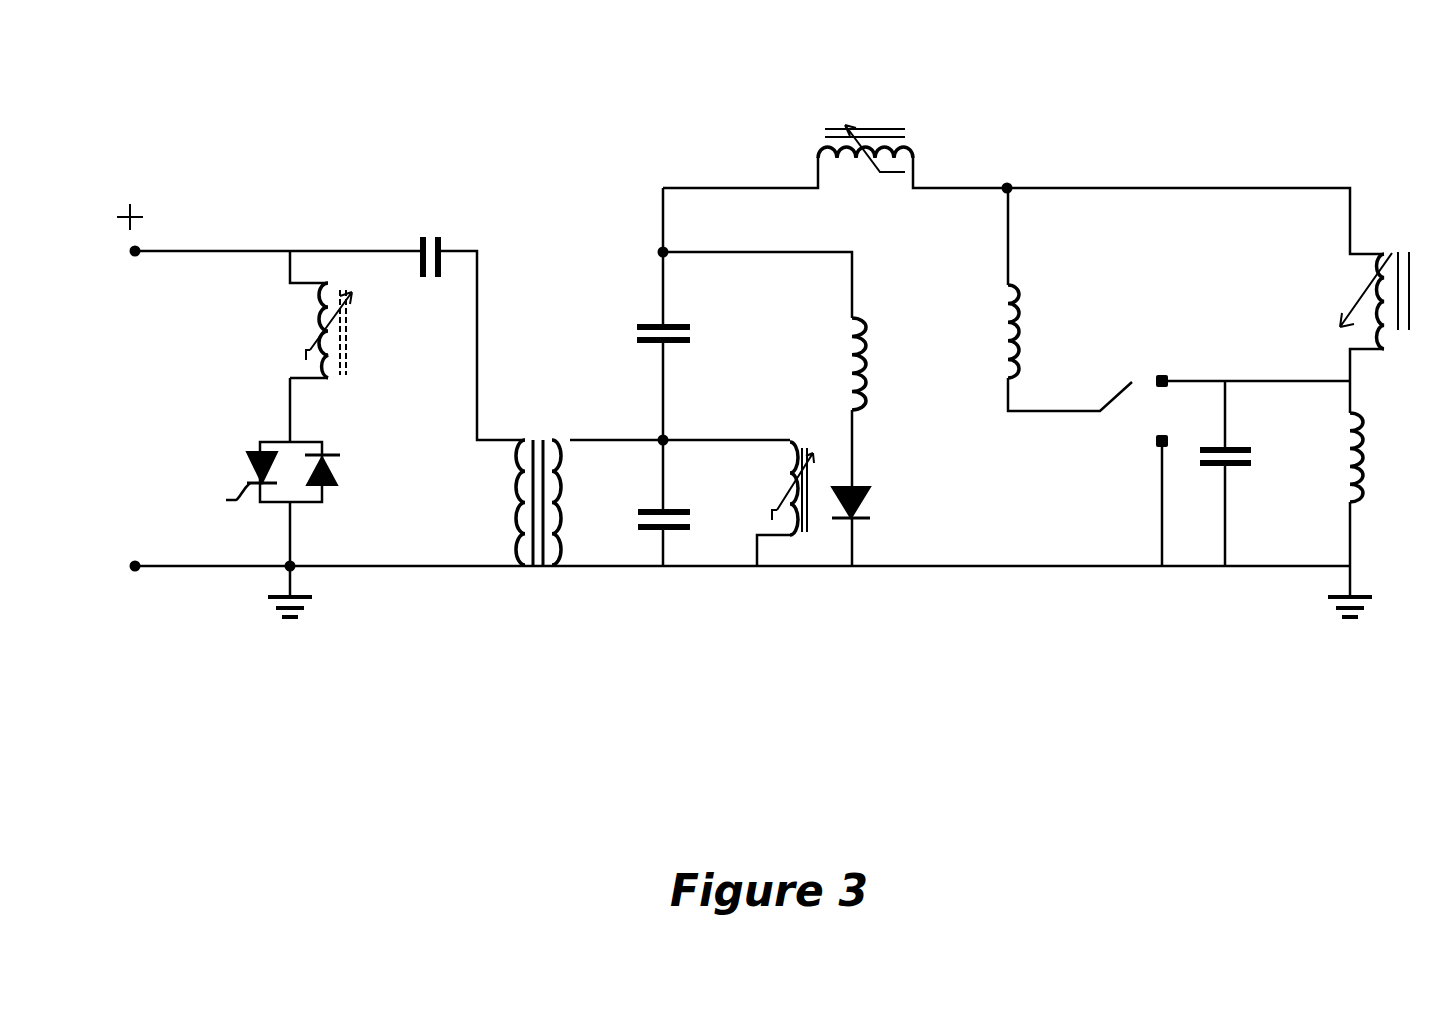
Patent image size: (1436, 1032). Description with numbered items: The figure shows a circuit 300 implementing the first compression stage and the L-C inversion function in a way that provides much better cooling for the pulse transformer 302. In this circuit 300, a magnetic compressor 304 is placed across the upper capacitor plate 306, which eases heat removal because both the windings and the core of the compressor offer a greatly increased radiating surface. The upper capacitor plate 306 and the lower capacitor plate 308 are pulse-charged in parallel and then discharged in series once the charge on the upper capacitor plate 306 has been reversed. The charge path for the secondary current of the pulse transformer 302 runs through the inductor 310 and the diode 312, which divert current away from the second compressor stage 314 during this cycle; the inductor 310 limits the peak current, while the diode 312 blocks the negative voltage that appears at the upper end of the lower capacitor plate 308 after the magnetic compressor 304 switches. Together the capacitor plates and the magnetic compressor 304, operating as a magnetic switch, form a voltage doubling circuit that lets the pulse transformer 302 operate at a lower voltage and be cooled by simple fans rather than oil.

The circuit 300 is at (380, 777).
The pulse transformer T1 302 is at (537, 583).
The magnetic compressor L2 304 is at (800, 555).
The capacitor plate C2 306 is at (677, 532).
The capacitor plate C3 308 is at (642, 317).
The inductor L4 310 is at (880, 320).
The diode D1 312 is at (865, 500).
The second compressor stage L3 314 is at (940, 126).